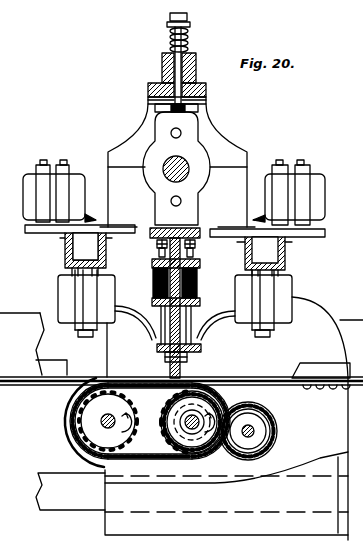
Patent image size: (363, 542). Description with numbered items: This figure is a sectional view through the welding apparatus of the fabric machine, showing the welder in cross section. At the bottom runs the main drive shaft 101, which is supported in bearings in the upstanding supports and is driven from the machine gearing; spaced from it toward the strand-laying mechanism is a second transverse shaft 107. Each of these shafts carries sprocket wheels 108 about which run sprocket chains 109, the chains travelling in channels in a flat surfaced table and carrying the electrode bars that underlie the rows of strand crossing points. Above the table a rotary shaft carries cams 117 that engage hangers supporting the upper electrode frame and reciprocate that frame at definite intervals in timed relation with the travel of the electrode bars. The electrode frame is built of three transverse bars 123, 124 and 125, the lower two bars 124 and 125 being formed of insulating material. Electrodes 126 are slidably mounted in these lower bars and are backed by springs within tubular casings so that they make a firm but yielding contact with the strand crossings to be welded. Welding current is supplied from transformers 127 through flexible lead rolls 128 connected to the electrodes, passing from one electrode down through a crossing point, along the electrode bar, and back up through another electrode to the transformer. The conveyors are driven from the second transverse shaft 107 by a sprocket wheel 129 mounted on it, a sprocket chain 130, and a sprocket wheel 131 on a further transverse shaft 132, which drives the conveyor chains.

The main drive shaft 101 is at (102, 422).
The second transverse shaft 107 is at (194, 424).
The sprocket wheels 108 is at (90, 402).
The sprocket chains 109 is at (82, 445).
The cams 117 is at (193, 155).
The transverse bar 123 is at (198, 266).
The transverse bar 124 is at (198, 302).
The transverse bar 125 is at (202, 352).
The electrodes 126 is at (153, 273).
The transformers 127 is at (56, 291).
The flexible lead rolls 128 is at (118, 316).
The sprocket wheel 129 is at (200, 432).
The sprocket chain 130 is at (272, 448).
The sprocket wheel 131 is at (256, 437).
The transverse shaft 132 is at (250, 428).